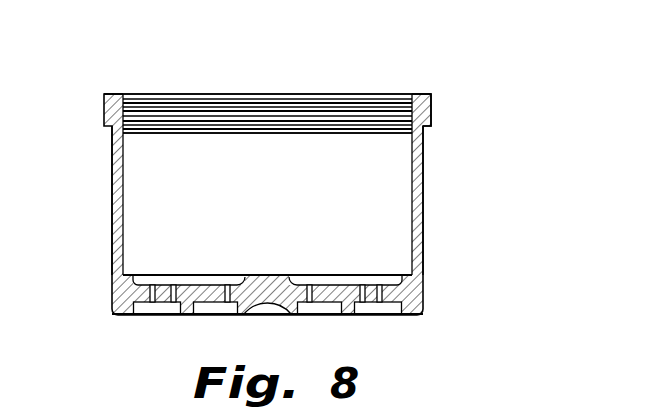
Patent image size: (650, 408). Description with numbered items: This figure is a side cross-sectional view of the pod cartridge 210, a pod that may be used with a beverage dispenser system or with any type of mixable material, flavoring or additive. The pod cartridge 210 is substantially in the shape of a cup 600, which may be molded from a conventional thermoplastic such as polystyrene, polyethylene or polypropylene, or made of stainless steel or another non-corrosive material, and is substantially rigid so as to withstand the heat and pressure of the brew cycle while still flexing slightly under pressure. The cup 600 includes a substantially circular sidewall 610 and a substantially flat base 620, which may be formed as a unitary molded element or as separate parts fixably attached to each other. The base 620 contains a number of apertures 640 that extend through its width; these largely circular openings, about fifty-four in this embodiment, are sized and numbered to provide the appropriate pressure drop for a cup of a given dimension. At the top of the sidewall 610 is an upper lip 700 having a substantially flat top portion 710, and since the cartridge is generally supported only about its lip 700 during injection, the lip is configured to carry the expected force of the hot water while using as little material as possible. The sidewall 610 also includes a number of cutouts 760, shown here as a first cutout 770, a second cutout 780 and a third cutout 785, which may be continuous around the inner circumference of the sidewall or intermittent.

The pod cartridge 210 is at (113, 60).
The cup 600 is at (430, 194).
The sidewall 610 is at (425, 256).
The base 620 is at (410, 314).
The apertures 640 is at (154, 290).
The upper lip 700 is at (432, 110).
The flat top portion 710 is at (425, 95).
The cutouts 760 is at (427, 127).
The first cutout 770 is at (134, 96).
The second cutout 780 is at (122, 122).
The third cutout 785 is at (121, 133).